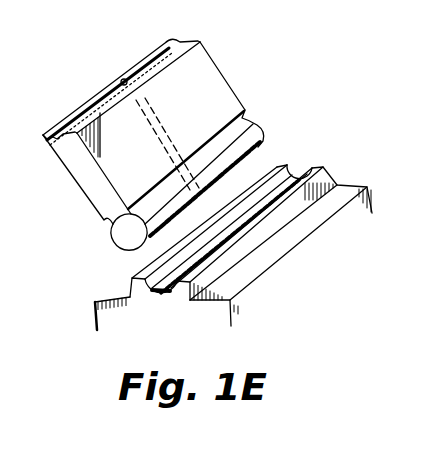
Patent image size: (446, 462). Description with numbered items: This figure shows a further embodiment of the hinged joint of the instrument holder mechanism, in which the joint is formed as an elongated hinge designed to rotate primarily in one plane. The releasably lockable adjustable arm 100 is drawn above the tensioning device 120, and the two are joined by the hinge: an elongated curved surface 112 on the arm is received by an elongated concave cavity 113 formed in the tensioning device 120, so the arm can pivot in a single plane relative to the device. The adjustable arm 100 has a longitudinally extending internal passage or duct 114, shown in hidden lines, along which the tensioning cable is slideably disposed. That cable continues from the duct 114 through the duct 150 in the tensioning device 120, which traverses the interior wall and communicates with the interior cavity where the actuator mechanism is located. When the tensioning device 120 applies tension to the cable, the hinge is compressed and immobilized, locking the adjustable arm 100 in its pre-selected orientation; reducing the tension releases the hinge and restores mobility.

The adjustable arm 100 is at (143, 148).
The elongated curved surface 112 is at (160, 232).
The elongated concave cavity 113 is at (145, 287).
The duct 114 is at (158, 123).
The tensioning device 120 is at (233, 260).
The duct 150 is at (233, 235).